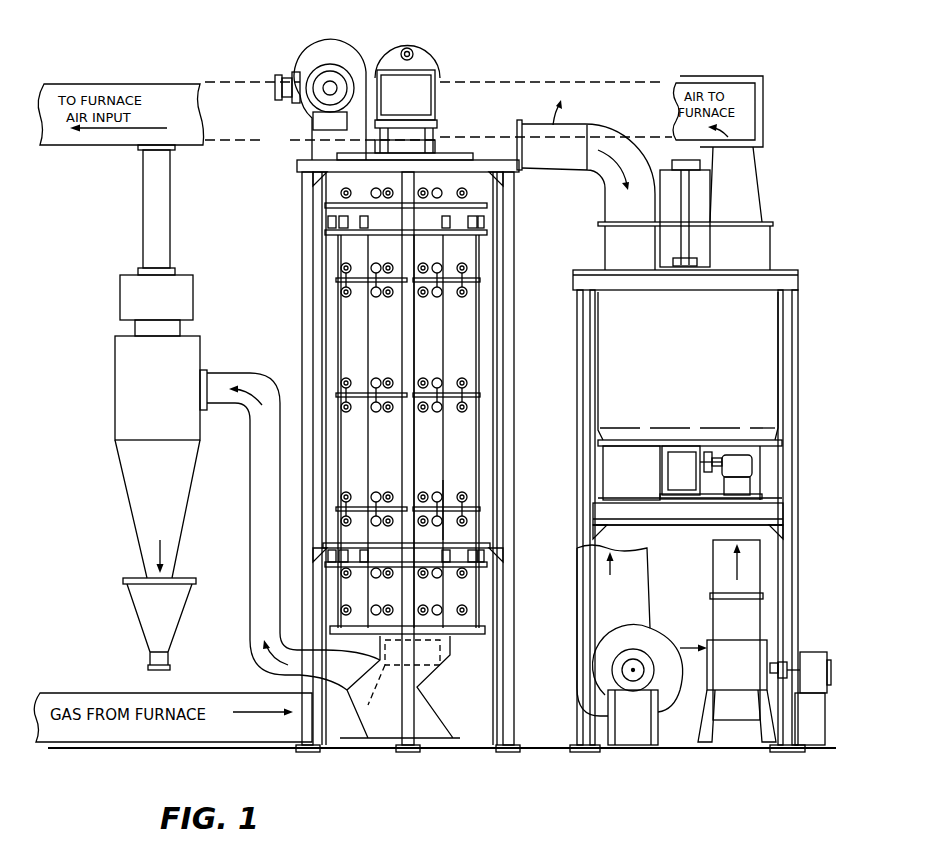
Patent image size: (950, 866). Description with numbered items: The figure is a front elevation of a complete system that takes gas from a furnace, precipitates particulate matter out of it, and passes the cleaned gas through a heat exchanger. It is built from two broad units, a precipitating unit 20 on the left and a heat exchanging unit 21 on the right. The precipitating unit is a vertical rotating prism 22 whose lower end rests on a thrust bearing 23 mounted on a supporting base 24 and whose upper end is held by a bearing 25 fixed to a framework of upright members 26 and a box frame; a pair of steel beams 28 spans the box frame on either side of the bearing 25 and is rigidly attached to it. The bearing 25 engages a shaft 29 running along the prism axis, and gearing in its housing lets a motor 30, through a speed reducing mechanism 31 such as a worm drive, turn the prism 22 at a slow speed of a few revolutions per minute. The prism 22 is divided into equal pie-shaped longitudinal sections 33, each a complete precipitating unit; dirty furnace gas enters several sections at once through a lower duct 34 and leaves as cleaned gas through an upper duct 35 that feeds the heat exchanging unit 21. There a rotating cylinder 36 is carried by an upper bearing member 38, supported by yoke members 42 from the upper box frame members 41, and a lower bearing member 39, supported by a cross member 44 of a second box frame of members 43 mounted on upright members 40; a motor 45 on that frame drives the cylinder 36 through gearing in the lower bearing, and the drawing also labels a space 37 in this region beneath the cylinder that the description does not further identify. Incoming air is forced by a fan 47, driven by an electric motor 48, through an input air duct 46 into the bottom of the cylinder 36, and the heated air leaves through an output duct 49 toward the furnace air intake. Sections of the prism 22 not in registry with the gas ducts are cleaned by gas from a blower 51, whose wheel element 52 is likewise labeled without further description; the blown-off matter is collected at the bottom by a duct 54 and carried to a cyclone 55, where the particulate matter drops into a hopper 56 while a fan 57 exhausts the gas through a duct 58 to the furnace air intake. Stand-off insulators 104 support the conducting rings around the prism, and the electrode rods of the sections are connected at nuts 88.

The precipitating unit 20 is at (287, 293).
The heat exchanging unit 21 is at (573, 427).
The rotating prism 22 is at (333, 352).
The thrust bearing 23 is at (433, 658).
The supporting base 24 is at (435, 727).
The bearing 25 is at (417, 107).
The upright members 26 is at (410, 447).
The steel beams 28 is at (400, 158).
The shaft 29 is at (322, 142).
The motor 30 is at (273, 93).
The speed reducing mechanism 31 is at (417, 65).
The longitudinal sections 33 is at (468, 345).
The duct 34 is at (333, 730).
The duct 35 is at (497, 135).
The cylinder 36 is at (707, 352).
The compartment 37 is at (617, 470).
The upper bearing member 38 is at (628, 668).
The lower bearing member 39 is at (685, 453).
The upright members 40 is at (790, 512).
The upper box frame members 41 is at (773, 280).
The yoke members 42 is at (692, 215).
The second box frame members 43 is at (757, 517).
The cross member 44 is at (684, 500).
The motor 45 is at (737, 462).
The input air duct 46 is at (757, 455).
The fan 47 is at (750, 618).
The electric motor 48 is at (807, 657).
The output duct 49 is at (740, 172).
The blower 51 is at (348, 65).
The fan 52 is at (322, 72).
The duct 54 is at (347, 652).
The cyclone 55 is at (190, 355).
The hopper 56 is at (173, 612).
The fan 57 is at (182, 295).
The duct 58 is at (163, 183).
The nuts 88 is at (467, 485).
The stand-off insulators 104 is at (483, 552).